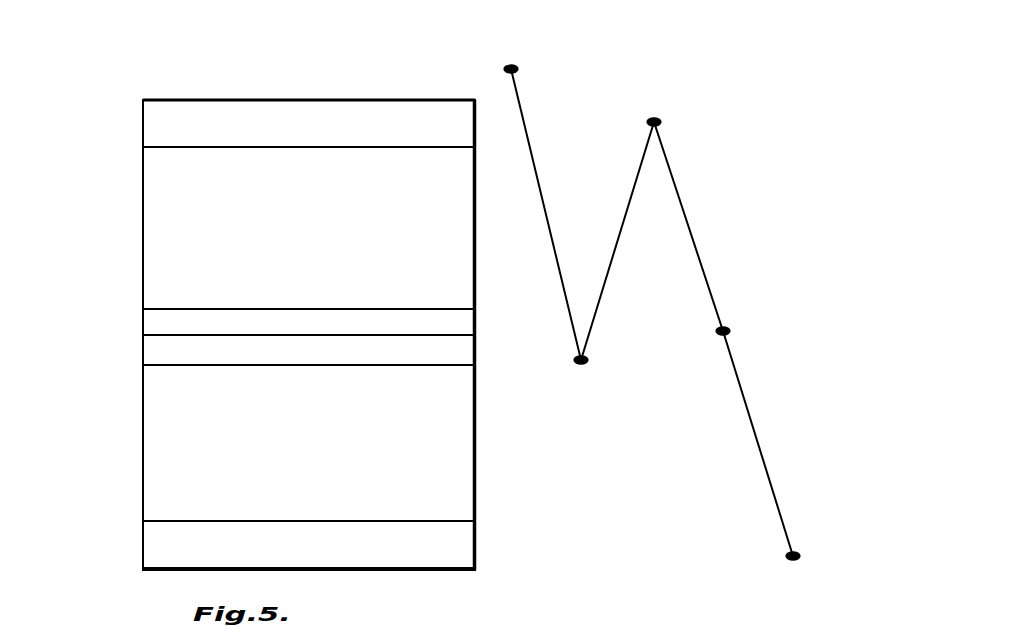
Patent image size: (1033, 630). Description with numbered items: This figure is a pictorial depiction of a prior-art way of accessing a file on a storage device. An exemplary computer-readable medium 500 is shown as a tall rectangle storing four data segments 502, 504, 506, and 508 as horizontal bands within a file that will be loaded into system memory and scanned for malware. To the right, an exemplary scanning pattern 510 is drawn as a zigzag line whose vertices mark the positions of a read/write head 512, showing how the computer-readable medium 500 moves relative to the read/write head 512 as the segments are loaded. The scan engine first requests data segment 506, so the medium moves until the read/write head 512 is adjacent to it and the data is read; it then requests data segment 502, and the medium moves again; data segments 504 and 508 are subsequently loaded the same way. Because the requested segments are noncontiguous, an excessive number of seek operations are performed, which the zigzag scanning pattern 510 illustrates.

The computer-readable medium 500 is at (476, 455).
The data segment 502 is at (143, 124).
The data segment 504 is at (143, 319).
The data segment 506 is at (143, 355).
The data segment 508 is at (143, 554).
The scanning pattern 510 is at (770, 86).
The read/write head 512 is at (518, 69).